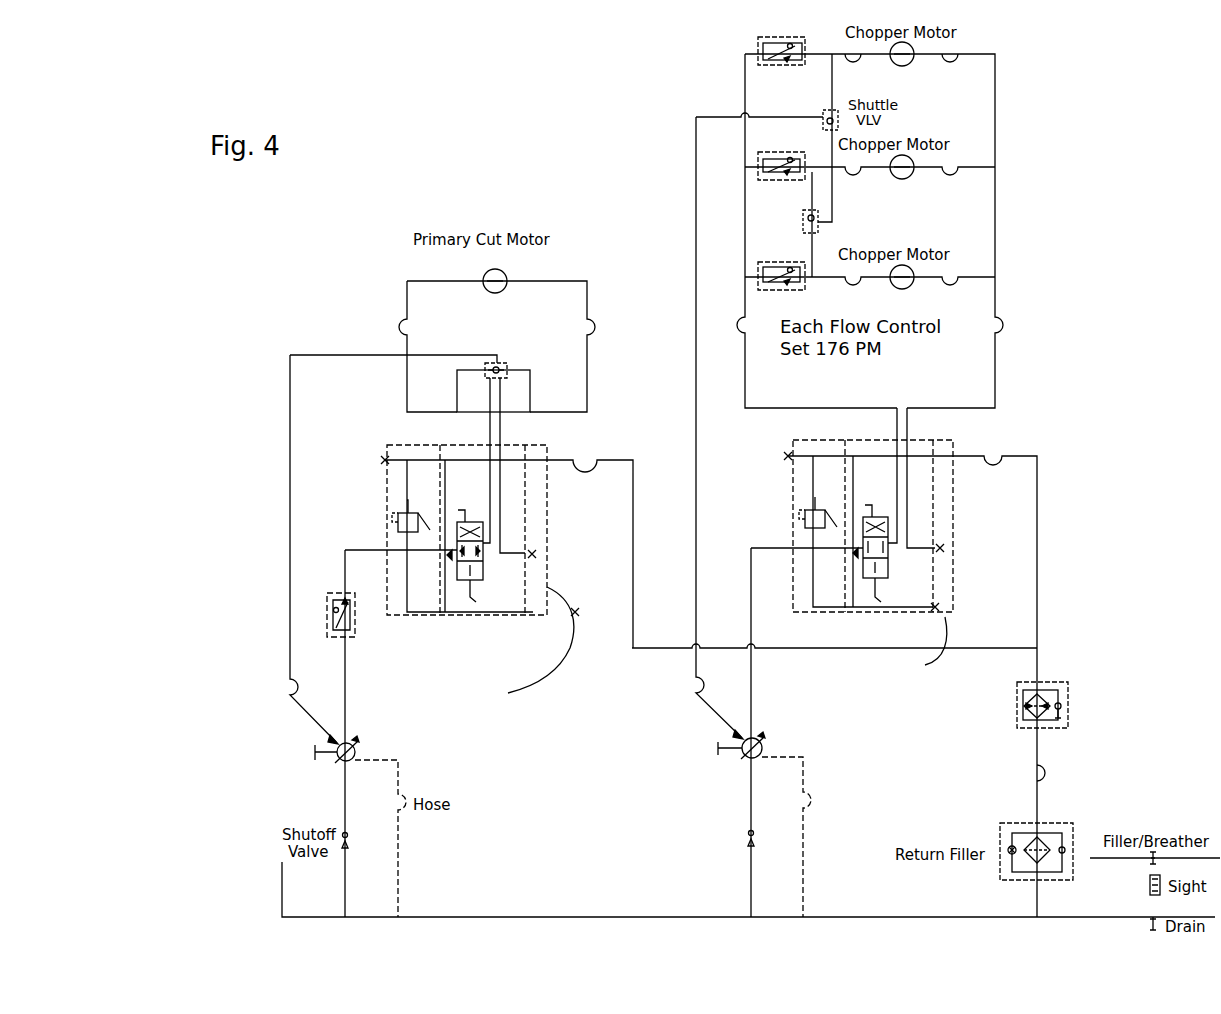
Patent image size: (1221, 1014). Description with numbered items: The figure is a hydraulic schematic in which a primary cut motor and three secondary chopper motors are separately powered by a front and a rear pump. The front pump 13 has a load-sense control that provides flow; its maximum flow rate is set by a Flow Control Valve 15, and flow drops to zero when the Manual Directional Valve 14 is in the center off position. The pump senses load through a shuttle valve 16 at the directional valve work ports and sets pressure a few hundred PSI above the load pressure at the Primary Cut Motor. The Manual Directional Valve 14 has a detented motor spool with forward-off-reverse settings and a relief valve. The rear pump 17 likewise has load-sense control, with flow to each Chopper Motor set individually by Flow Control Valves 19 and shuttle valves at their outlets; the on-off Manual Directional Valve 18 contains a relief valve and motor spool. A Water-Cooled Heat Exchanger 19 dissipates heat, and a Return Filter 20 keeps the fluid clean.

The front pump 13 is at (340, 760).
The Manual Directional Valve 14 is at (392, 623).
The Flow Control Valve 15 is at (320, 612).
The shuttle valve 16 is at (457, 392).
The rear pump 17 is at (743, 758).
The Manual Directional Valve 18 is at (957, 602).
The Flow Control Valves 19 is at (762, 277).
The Return Filter 20 is at (1063, 822).